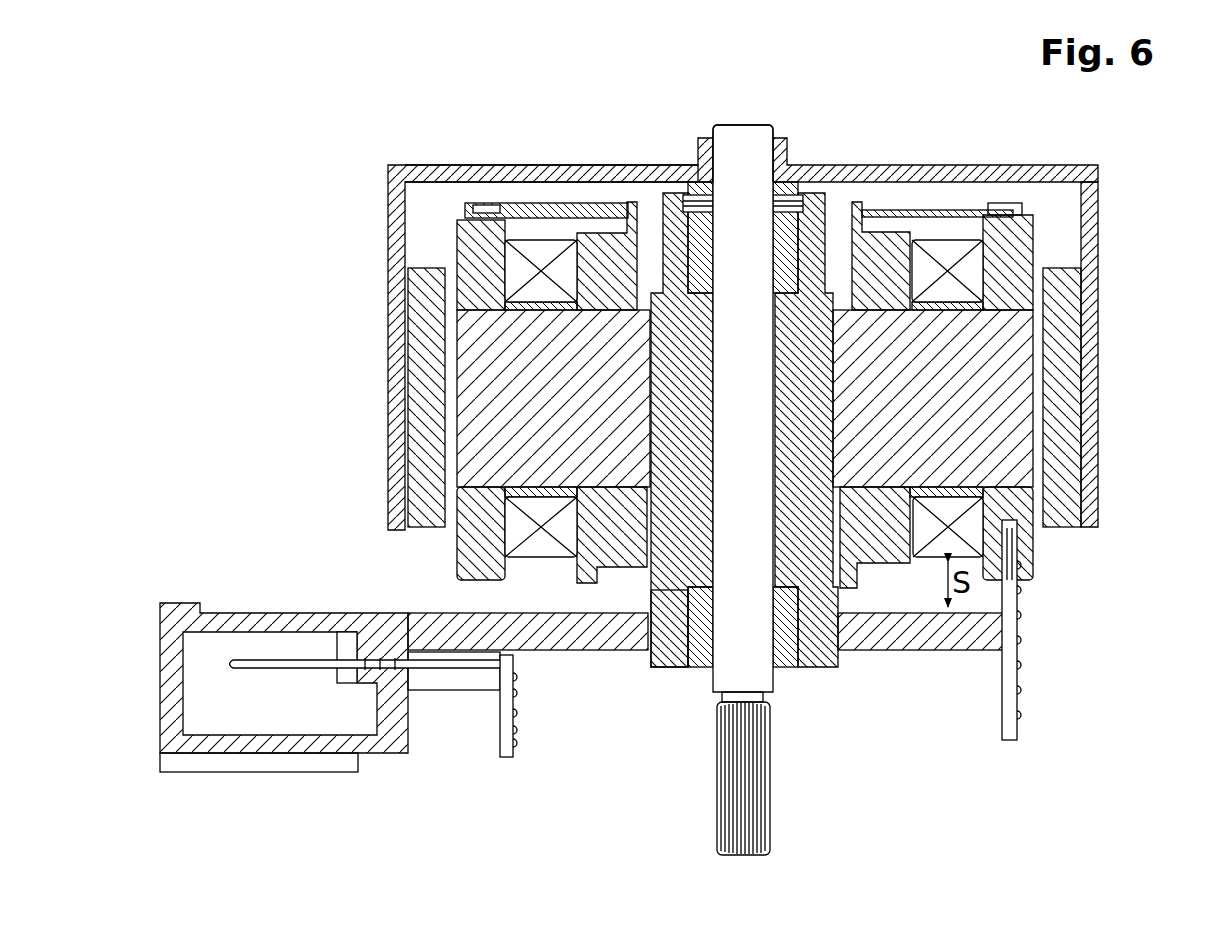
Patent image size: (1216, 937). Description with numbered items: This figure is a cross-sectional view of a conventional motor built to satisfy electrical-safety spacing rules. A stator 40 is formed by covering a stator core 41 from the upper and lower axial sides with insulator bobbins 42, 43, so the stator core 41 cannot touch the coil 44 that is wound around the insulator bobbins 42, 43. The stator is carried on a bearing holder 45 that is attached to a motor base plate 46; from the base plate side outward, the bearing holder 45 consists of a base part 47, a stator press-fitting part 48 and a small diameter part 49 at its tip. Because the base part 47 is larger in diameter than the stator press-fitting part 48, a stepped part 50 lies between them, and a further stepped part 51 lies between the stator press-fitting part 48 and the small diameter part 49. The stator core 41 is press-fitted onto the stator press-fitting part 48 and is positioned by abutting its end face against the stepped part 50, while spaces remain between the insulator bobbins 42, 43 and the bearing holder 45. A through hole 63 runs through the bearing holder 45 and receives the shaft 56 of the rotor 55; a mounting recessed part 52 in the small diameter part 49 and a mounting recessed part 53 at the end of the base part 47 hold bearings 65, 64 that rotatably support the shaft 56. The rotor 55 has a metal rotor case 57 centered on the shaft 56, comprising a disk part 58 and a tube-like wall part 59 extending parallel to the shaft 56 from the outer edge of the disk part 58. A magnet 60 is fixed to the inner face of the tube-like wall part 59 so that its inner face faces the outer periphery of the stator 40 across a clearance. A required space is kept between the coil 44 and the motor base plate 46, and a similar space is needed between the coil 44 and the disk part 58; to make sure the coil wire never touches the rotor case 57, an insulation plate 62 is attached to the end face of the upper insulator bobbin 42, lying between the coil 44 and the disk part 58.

The rotor 55 is at (386, 167).
The rotor case 57 is at (474, 165).
The insulation plate 62 is at (597, 210).
The small diameter part 49 is at (660, 203).
The shaft 56 is at (735, 140).
The bearing 65 is at (815, 245).
The disk part 58 is at (905, 165).
The coil 44 is at (953, 253).
The tube-like wall part 59 is at (1097, 218).
The insulator bobbin 42 is at (1008, 258).
The stator core 41 is at (1008, 360).
The stator 40 is at (1035, 428).
The insulator bobbin 43 is at (1012, 506).
The magnet 60 is at (1063, 522).
The motor base plate 46 is at (935, 645).
The through hole 63 is at (773, 538).
The mounting recessed part 52 is at (703, 268).
The stepped part 51 is at (668, 294).
The bearing holder 45 is at (648, 380).
The stator press-fitting part 48 is at (651, 420).
The stepped part 50 is at (649, 484).
The base part 47 is at (666, 668).
The bearing 64 is at (700, 666).
The mounting recessed part 53 is at (789, 650).